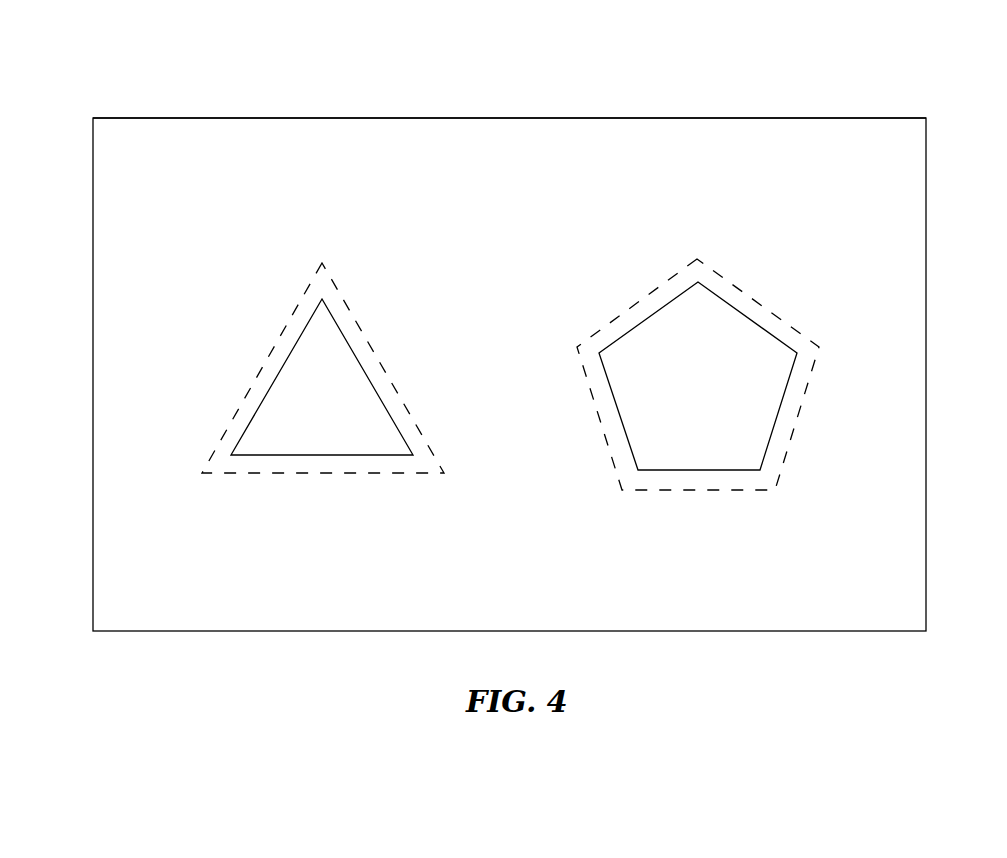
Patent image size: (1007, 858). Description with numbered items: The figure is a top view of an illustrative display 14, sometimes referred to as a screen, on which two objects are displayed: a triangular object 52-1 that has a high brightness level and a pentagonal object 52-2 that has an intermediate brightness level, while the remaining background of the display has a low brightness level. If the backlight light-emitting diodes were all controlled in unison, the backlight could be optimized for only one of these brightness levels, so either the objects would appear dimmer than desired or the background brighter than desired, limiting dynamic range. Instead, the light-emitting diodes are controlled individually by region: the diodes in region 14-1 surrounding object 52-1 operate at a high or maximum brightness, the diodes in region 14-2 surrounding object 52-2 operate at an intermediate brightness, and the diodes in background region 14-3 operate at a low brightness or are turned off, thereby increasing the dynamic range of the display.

The display 14 is at (90, 81).
The region of the display 14-1 is at (420, 432).
The region of the display 14-2 is at (790, 442).
The background region 14-3 is at (846, 138).
The object 52-1 is at (350, 365).
The object 52-2 is at (742, 337).